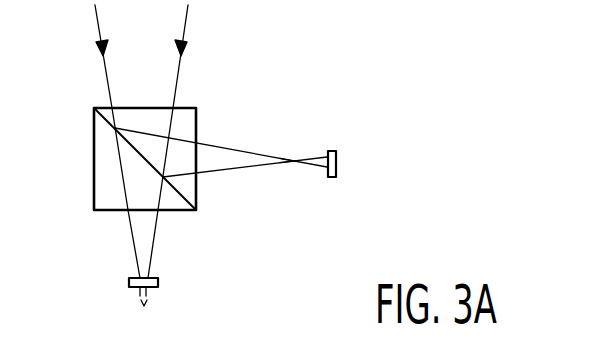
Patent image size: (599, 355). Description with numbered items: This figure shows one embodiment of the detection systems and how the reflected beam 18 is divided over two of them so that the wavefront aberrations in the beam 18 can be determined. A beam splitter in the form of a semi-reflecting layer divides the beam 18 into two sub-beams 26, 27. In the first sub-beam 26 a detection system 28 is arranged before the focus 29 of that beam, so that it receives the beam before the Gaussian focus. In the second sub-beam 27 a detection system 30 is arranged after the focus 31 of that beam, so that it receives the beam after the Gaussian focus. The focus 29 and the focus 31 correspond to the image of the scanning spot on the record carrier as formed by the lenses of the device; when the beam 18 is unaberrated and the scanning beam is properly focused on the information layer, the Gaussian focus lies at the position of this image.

The reflected beam 18 is at (97, 21).
The sub-beam 26 is at (130, 231).
The sub-beam 27 is at (231, 149).
The detection system 28 is at (129, 283).
The focus 29 is at (144, 307).
The detection system 30 is at (331, 151).
The focus 31 is at (288, 159).